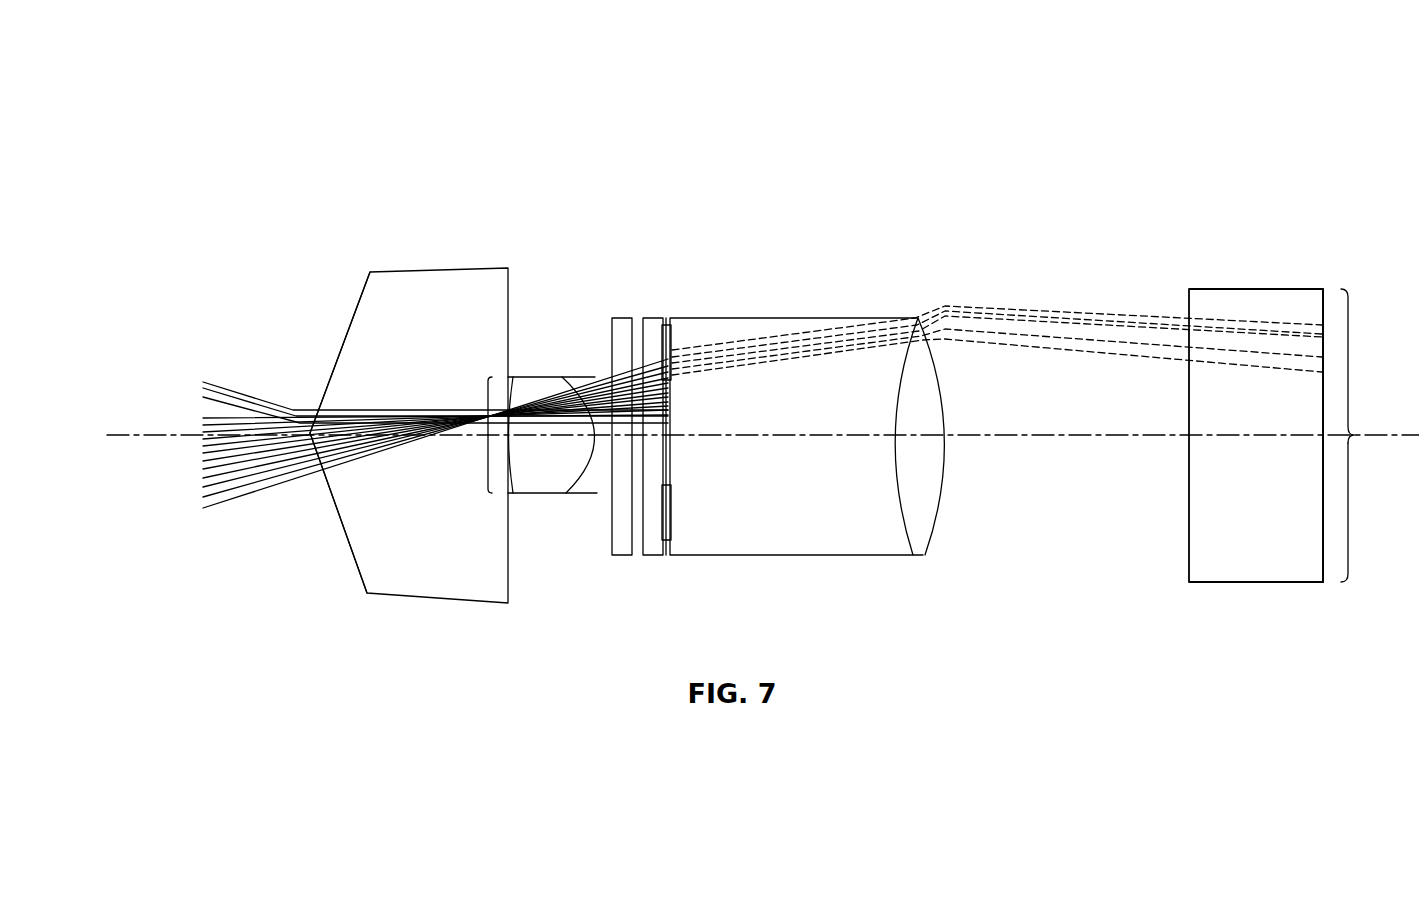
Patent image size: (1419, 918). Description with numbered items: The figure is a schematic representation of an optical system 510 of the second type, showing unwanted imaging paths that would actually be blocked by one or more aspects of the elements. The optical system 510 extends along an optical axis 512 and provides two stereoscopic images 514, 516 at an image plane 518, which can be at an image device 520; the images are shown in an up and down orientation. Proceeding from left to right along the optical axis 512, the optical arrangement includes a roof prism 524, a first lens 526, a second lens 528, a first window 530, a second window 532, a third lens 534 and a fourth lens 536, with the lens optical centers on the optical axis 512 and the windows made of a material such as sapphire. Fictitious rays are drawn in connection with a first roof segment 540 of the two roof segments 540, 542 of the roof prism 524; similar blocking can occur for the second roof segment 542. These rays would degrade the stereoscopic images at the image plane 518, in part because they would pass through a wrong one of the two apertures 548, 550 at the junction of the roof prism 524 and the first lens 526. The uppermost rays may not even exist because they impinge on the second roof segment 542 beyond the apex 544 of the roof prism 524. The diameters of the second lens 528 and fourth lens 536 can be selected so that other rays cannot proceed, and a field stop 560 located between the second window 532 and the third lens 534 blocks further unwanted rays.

The optical system 510 is at (276, 70).
The optical axis 512 is at (123, 434).
The stereoscopic image 514 is at (1375, 366).
The stereoscopic image 516 is at (1375, 512).
The image plane 518 is at (1332, 280).
The image device 520 is at (1222, 301).
The roof prism 524 is at (416, 284).
The first lens 526 is at (526, 388).
The second lens 528 is at (588, 472).
The first window 530 is at (621, 327).
The second window 532 is at (652, 327).
The third lens 534 is at (880, 535).
The fourth lens 536 is at (930, 490).
The roof segment 540 is at (345, 540).
The roof segment 542 is at (345, 330).
The apex 544 is at (292, 420).
The aperture 548 is at (483, 462).
The aperture 550 is at (483, 405).
The field stop 560 is at (672, 505).